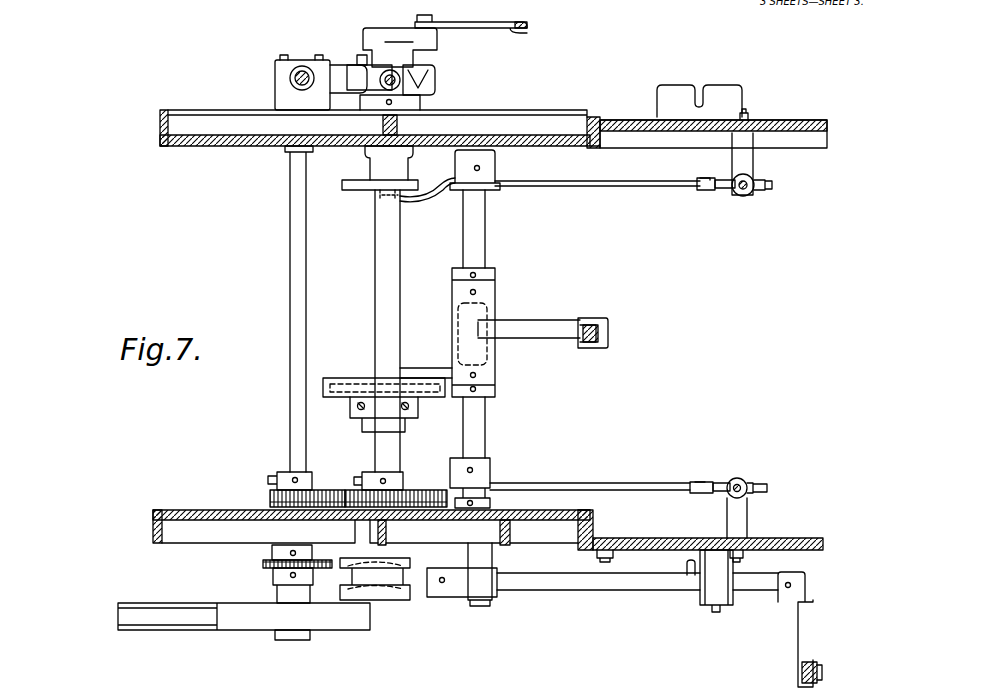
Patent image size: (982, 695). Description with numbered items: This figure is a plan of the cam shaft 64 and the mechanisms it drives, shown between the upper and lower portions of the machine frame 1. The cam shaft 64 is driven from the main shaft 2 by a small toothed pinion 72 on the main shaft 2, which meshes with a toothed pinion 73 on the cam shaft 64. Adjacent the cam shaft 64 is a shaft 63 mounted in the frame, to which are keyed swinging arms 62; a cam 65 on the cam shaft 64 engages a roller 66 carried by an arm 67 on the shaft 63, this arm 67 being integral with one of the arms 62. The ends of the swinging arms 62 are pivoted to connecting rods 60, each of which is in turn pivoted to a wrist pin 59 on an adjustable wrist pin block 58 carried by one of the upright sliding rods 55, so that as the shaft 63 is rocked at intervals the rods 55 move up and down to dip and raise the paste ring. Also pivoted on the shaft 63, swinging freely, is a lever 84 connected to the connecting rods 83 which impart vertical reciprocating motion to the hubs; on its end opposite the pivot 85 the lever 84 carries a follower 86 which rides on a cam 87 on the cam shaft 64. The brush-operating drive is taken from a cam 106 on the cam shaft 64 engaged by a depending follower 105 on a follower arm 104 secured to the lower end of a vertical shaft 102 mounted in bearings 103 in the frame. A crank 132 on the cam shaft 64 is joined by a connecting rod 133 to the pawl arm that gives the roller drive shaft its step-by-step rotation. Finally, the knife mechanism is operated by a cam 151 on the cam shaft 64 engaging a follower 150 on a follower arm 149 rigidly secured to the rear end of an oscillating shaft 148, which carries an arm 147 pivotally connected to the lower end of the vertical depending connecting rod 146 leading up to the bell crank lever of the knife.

The frame plate 1 is at (552, 118).
The main shaft 2 is at (289, 440).
The upright sliding rods 55 is at (740, 192).
The adjustable wrist pin block 58 is at (718, 192).
The wrist pin 59 is at (698, 192).
The connecting rod 60 is at (700, 178).
The swinging arms 62 is at (600, 190).
The shaft 63 is at (488, 414).
The cam shaft 64 is at (402, 254).
The cam 65 is at (360, 192).
The roller 66 is at (372, 205).
The arm 67 is at (432, 204).
The small toothed pinion 72 is at (318, 490).
The toothed pinion 73 is at (415, 490).
The connecting rods 83 is at (610, 330).
The lever 84 is at (528, 330).
The pivot 85 is at (485, 292).
The follower 86 is at (395, 382).
The cam 87 is at (330, 382).
The vertical shaft 102 is at (290, 80).
The bearings 103 is at (278, 64).
The follower arm 104 is at (338, 68).
The depending follower 105 is at (360, 54).
The cam 106 is at (436, 82).
The crank 132 is at (437, 40).
The connecting rod 133 is at (528, 31).
The vertical depending connecting rod 146 is at (800, 672).
The arm 147 is at (785, 600).
The oscillating shaft 148 is at (597, 592).
The follower arm 149 is at (478, 608).
The follower 150 is at (440, 598).
The cam 151 is at (392, 602).